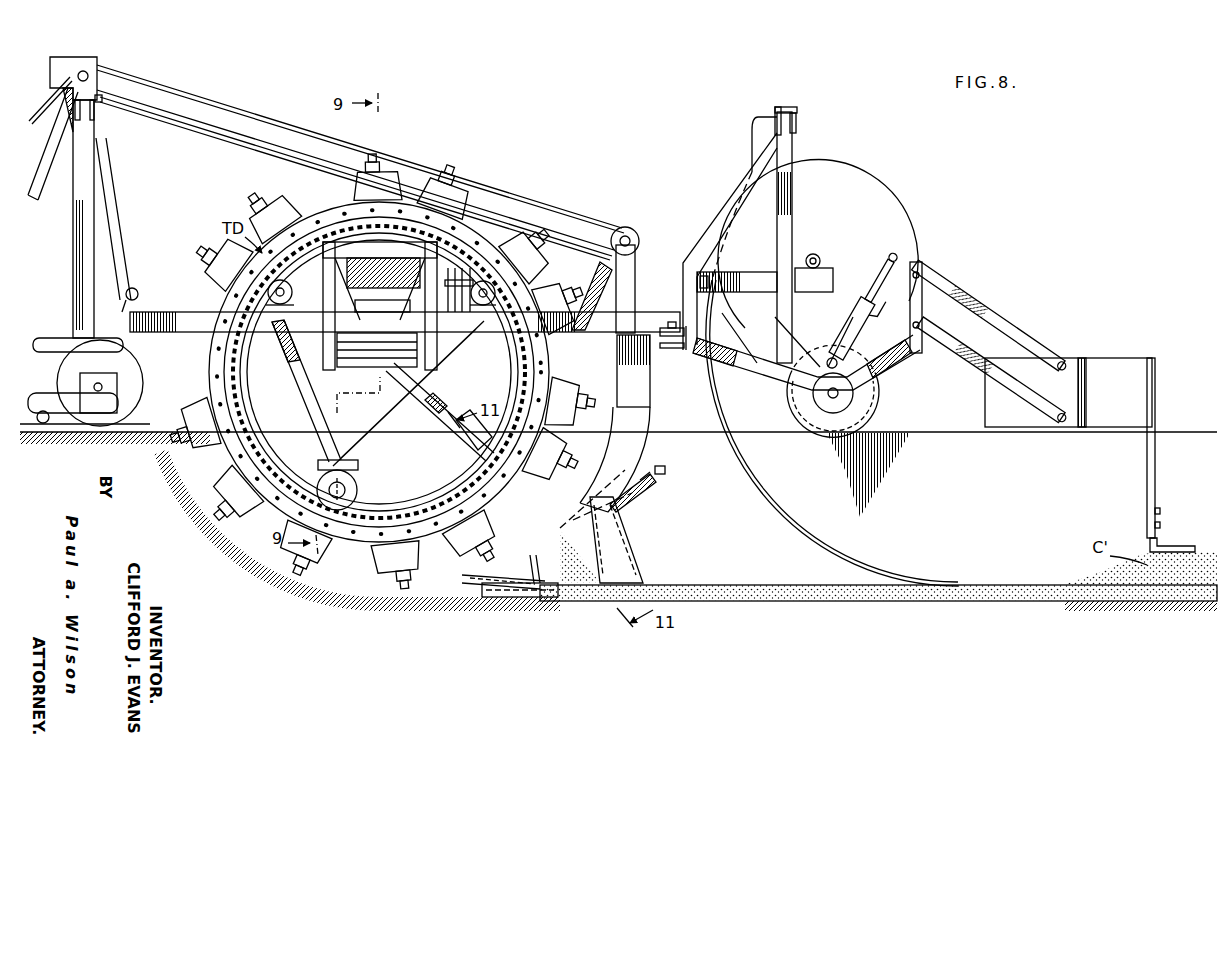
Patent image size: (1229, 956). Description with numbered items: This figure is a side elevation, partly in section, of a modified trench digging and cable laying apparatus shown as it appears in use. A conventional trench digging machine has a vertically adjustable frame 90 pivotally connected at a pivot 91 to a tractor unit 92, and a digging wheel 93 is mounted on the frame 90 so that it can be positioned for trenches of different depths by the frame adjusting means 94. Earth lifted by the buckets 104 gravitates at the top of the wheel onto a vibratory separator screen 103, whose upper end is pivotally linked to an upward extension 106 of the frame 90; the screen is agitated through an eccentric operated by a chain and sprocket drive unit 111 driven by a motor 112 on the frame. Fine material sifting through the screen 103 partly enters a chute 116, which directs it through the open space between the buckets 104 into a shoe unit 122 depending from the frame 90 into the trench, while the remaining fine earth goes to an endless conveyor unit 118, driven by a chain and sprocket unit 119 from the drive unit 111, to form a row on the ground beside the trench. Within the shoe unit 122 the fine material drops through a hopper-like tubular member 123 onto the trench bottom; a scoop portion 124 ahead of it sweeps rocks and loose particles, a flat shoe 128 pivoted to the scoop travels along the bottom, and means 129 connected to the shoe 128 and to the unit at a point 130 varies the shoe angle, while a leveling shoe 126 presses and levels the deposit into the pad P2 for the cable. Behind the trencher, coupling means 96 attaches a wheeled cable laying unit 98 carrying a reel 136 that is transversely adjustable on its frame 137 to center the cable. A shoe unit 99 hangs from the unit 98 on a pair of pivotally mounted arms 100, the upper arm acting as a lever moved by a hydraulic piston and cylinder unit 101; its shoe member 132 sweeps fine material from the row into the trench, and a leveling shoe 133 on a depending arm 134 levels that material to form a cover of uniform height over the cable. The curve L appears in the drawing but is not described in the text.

The vertically adjustable frame 90 is at (515, 325).
The pivotal connection 91 is at (133, 286).
The tractor unit 92 is at (108, 216).
The digging wheel 93 is at (242, 420).
The frame adjusting means 94 is at (250, 113).
The coupling means 96 is at (668, 325).
The wheeled cable laying unit 98 is at (870, 175).
The shoe unit 99 is at (1118, 357).
The pivotally mounted arms 100 is at (985, 300).
The hydraulic piston and cylinder unit 101 is at (843, 335).
The vibratory separator screen 103 is at (378, 268).
The buckets 104 is at (458, 172).
The upward extension 106 is at (325, 283).
The chain and sprocket drive unit 111 is at (452, 280).
The motor 112 is at (475, 288).
The chute 116 is at (437, 413).
The endless conveyor unit 118 is at (358, 372).
The chain and sprocket unit 119 is at (443, 323).
The shoe unit 122 is at (623, 452).
The tubular member 123 is at (607, 520).
The scoop portion 124 is at (463, 588).
The leveling shoe 126 is at (628, 570).
The flat shoe 128 is at (520, 597).
The angle varying means 129 is at (637, 500).
The connection point 130 is at (665, 470).
The shoe member 132 is at (1090, 367).
The leveling shoe 133 is at (1178, 547).
The arm 134 is at (1147, 470).
The reel 136 is at (890, 212).
The frame 137 is at (707, 232).
The disc L is at (775, 507).
The pad P2 is at (767, 587).